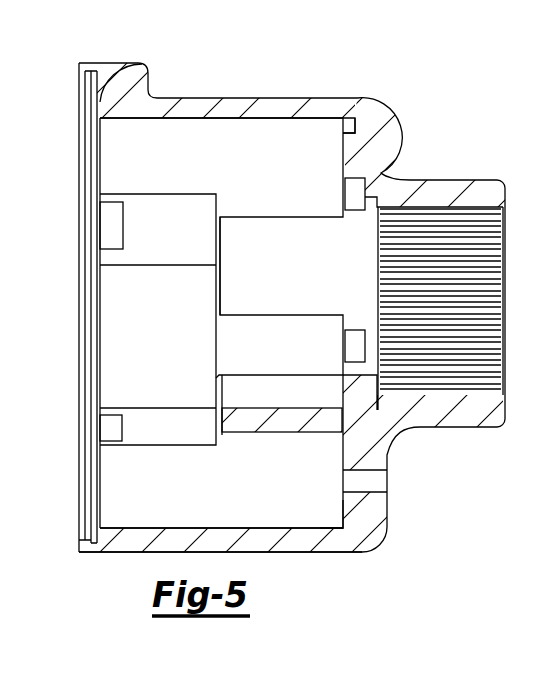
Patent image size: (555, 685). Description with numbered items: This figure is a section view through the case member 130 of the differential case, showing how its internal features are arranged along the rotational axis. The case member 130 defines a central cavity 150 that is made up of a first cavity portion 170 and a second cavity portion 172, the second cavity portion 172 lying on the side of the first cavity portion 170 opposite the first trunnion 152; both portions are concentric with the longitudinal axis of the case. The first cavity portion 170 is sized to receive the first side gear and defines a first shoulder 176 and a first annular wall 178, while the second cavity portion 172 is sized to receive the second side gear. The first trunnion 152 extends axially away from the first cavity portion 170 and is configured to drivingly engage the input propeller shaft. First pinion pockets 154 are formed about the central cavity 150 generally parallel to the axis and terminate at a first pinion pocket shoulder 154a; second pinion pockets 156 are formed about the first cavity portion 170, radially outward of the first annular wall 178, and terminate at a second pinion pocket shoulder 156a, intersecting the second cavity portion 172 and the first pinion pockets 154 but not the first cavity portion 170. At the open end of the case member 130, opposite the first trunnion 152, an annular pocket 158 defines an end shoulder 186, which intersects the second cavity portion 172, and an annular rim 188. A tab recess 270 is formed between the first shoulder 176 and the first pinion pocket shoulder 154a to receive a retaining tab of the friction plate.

The case member 130 is at (237, 99).
The central cavity 150 is at (277, 342).
The first trunnion 152 is at (443, 188).
The first pinion pockets 154 is at (327, 130).
The first pinion pocket shoulder 154a is at (360, 133).
The second pinion pockets 156 is at (313, 517).
The second pinion pocket shoulder 156a is at (343, 520).
The annular pocket 158 is at (83, 382).
The first cavity portion 170 is at (270, 238).
The second cavity portion 172 is at (167, 435).
The first shoulder 176 is at (347, 400).
The first annular wall 178 is at (243, 417).
The end shoulder 186 is at (140, 67).
The annular rim 188 is at (85, 62).
The tab recess 270 is at (355, 337).